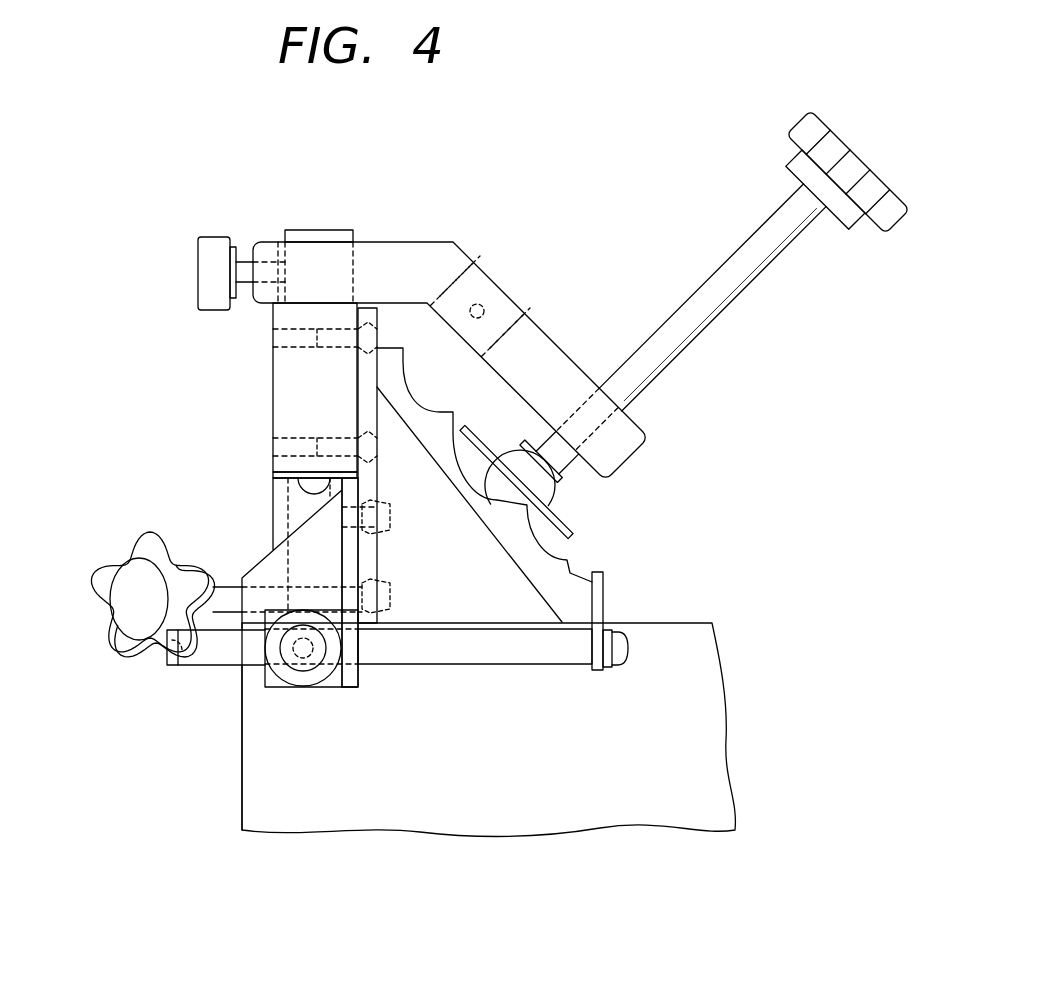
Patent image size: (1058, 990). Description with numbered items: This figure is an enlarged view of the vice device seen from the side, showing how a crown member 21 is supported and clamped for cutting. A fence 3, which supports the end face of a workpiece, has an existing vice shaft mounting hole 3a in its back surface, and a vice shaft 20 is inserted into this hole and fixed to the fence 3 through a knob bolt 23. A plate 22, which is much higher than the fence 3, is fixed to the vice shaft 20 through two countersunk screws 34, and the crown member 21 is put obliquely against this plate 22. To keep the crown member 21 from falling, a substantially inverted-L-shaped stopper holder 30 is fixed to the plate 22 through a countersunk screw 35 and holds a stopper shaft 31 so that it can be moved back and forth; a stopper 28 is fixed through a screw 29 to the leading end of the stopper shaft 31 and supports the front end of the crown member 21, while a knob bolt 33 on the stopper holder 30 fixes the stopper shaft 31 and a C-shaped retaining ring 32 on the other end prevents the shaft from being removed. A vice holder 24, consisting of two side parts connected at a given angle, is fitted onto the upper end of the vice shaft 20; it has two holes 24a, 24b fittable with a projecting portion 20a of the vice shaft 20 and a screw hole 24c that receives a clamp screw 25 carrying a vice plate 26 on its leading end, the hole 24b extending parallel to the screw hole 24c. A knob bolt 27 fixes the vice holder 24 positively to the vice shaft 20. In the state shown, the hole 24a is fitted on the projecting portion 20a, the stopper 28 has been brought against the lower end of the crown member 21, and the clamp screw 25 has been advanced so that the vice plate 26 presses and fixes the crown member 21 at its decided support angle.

The fence 3 is at (271, 525).
The vice shaft mounting hole 3a is at (274, 500).
The vice shaft 20 is at (273, 387).
The projecting portion 20a is at (325, 230).
The crown member 21 is at (572, 558).
The plate 22 is at (368, 530).
The knob bolt 23 is at (122, 545).
The vice holder 24 is at (433, 242).
The hole 24a is at (268, 240).
The hole 24b is at (510, 318).
The screw hole 24c is at (643, 443).
The clamp screw 25 is at (737, 257).
The vice plate 26 is at (560, 497).
The knob bolt 27 is at (222, 237).
The stopper 28 is at (597, 672).
The screw 29 is at (620, 668).
The stopper holder 30 is at (292, 690).
The stopper shaft 31 is at (497, 668).
The C-shaped retaining ring 32 is at (180, 668).
The knob bolt 33 is at (308, 690).
The countersunk screw 34 is at (378, 447).
The countersunk screw 35 is at (380, 596).